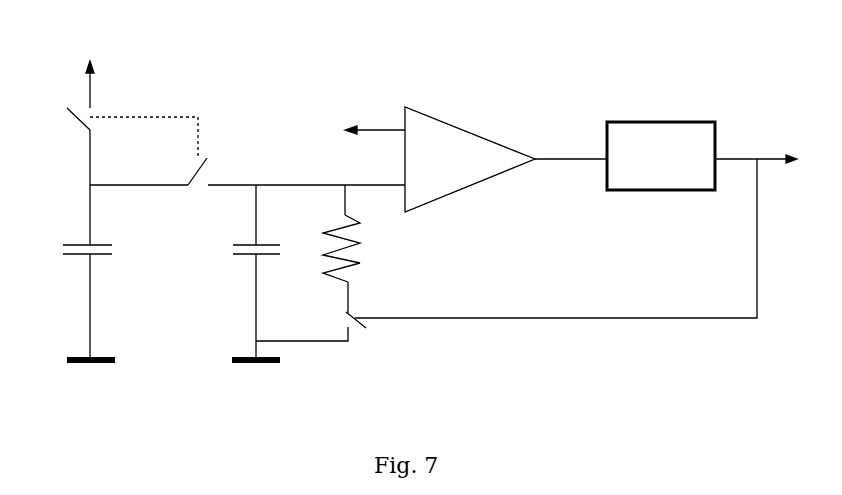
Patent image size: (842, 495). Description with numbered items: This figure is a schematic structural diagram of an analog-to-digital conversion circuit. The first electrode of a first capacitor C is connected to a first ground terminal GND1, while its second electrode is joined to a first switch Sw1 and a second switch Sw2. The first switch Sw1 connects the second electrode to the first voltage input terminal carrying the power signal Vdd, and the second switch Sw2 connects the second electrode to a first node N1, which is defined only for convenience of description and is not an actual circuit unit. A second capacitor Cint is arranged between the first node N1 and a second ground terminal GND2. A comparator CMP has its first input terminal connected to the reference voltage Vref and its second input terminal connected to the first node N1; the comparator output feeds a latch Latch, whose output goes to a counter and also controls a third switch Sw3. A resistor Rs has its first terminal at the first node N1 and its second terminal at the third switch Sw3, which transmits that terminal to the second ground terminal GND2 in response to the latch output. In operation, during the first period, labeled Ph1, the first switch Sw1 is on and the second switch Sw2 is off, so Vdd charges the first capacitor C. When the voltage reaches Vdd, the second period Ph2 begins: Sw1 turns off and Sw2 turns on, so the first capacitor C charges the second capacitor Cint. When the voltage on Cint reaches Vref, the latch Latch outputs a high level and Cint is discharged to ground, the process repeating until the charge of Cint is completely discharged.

The power signal Vdd is at (85, 72).
The first switch Sw1 is at (56, 119).
The first period stage Ph1 is at (144, 137).
The second period stage Ph2 is at (182, 167).
The second switch Sw2 is at (148, 200).
The first capacitor C is at (94, 245).
The first ground terminal GND1 is at (91, 377).
The first node N1 is at (306, 169).
The second capacitor Cint is at (290, 272).
The second ground terminal GND2 is at (256, 377).
The resistor Rs is at (352, 249).
The third switch Sw3 is at (551, 243).
The comparator CMP is at (470, 159).
The reference voltage Vref is at (375, 118).
The latch Latch is at (666, 156).